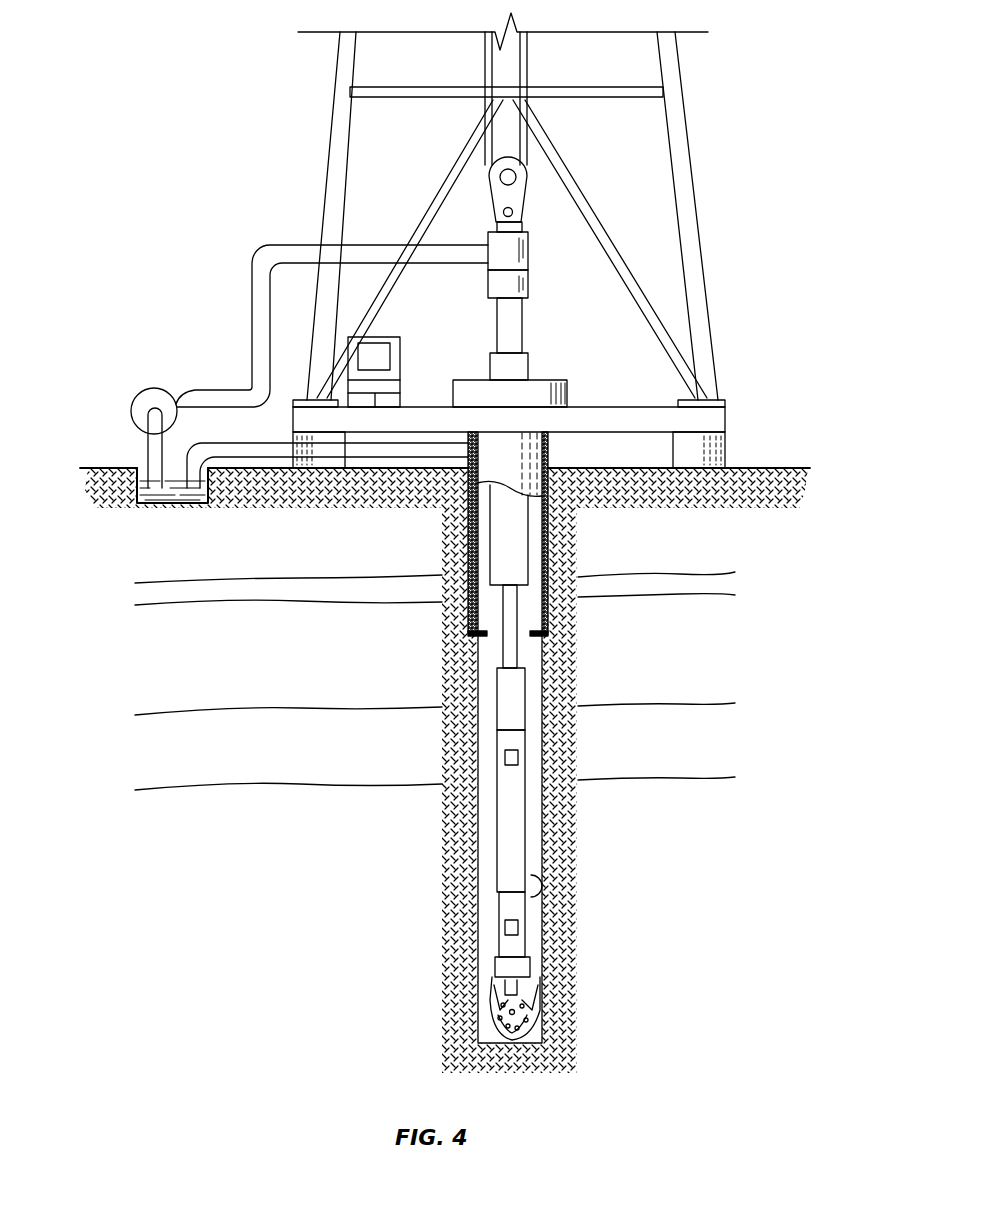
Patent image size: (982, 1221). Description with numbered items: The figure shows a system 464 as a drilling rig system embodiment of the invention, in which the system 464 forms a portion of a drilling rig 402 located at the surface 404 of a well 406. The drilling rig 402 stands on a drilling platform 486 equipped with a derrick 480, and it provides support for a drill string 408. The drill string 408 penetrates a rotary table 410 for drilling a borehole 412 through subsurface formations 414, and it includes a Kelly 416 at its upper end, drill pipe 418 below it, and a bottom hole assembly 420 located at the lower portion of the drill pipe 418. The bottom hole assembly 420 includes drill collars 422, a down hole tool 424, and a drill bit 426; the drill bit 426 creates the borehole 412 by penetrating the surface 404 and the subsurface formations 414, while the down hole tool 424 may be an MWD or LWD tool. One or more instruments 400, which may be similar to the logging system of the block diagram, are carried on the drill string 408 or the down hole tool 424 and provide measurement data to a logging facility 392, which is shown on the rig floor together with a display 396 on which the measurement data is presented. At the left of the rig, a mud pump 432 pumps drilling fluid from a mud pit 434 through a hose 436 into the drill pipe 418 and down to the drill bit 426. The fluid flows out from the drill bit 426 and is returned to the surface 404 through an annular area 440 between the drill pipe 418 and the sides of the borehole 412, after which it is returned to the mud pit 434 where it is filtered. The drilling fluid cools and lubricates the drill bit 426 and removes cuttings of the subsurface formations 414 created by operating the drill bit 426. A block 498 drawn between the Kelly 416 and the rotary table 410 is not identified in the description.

The system 464 is at (188, 147).
The drilling rig 402 is at (695, 177).
The derrick 480 is at (685, 113).
The Kelly 416 is at (522, 320).
The kelly bushing 498 is at (528, 362).
The rotary table 410 is at (568, 390).
The logging facility 392 is at (385, 328).
The display 396 is at (390, 365).
The drilling platform 486 is at (725, 412).
The hose 436 is at (252, 307).
The mud pump 432 is at (160, 387).
The mud pit 434 is at (142, 477).
The surface 404 is at (748, 467).
The well 406 is at (555, 460).
The drill collars 422 is at (528, 553).
The drill pipe 418 is at (513, 642).
The bottom hole assembly 420 is at (658, 633).
The annular area 440 is at (535, 665).
The down hole tool 424 is at (513, 743).
The instruments 400 is at (518, 760).
The drill string 408 is at (535, 832).
The borehole 412 is at (540, 880).
The drill bit 426 is at (537, 1000).
The subsurface formations 414 is at (120, 550).